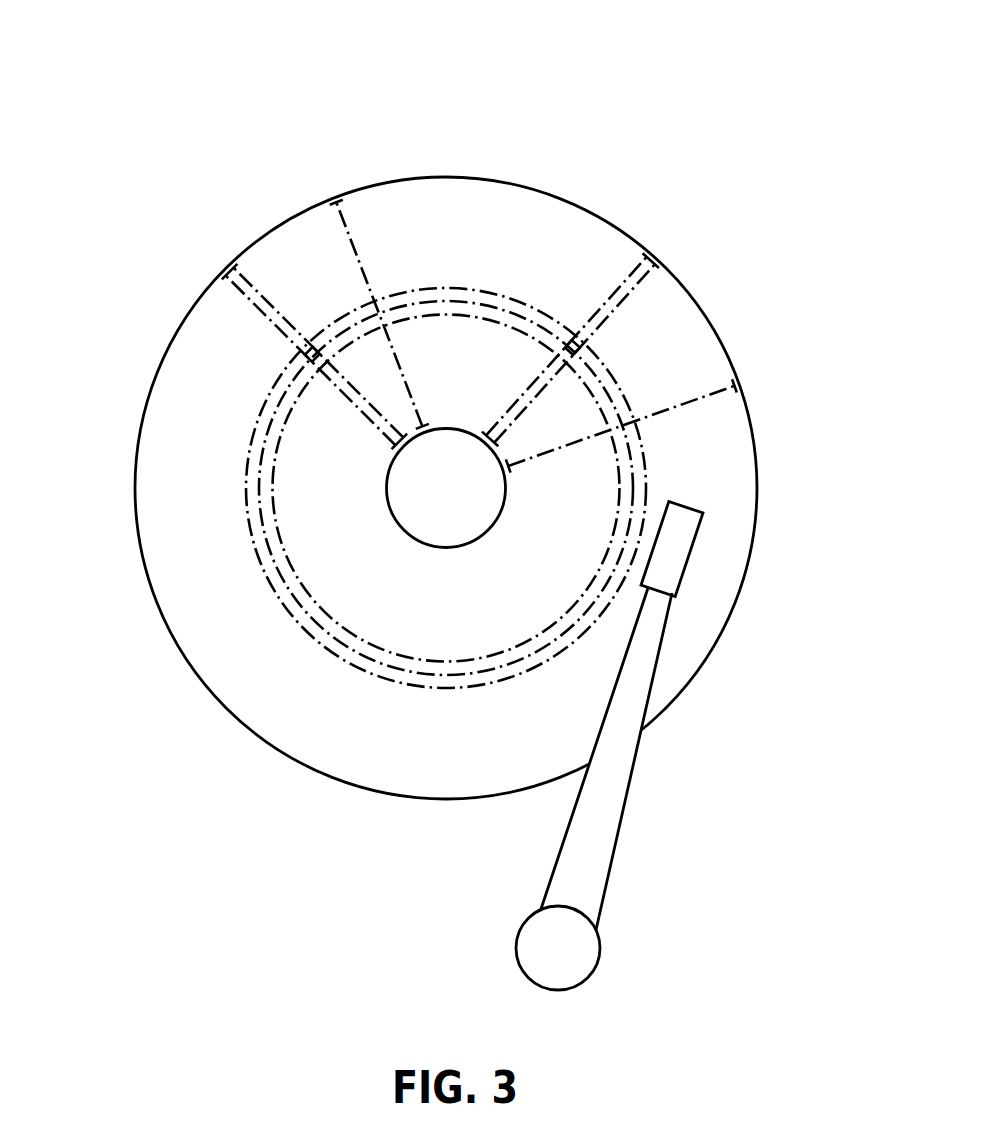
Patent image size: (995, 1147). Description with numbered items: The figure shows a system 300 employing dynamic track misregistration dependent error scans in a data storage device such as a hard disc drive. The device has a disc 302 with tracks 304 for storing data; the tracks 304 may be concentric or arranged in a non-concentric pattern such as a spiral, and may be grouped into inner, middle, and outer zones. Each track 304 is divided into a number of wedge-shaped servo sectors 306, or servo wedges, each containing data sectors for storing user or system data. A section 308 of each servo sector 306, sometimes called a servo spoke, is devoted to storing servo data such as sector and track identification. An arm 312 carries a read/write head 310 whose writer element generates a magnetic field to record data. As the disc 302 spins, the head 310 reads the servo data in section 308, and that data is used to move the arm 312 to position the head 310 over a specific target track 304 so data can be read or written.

The system employing dynamic track misregistration dependent error scans 300 is at (371, 75).
The disc 302 is at (152, 355).
The tracks 304 is at (308, 633).
The servo sectors 306 is at (320, 223).
The section 308 is at (233, 278).
The head 310 is at (678, 528).
The arm 312 is at (590, 852).